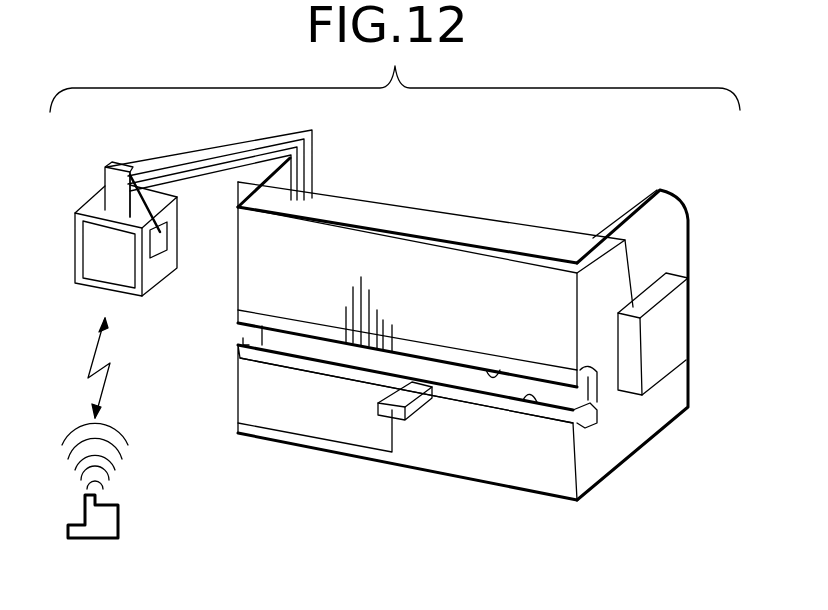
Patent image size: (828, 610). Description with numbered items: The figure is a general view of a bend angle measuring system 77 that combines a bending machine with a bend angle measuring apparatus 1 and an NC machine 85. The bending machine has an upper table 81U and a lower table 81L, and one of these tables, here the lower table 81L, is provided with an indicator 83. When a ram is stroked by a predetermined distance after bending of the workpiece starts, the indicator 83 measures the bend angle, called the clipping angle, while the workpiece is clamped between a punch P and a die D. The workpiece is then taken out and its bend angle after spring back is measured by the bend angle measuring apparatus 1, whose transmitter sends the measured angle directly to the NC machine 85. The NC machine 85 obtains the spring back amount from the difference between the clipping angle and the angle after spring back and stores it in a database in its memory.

The bend angle measuring apparatus 1 is at (91, 541).
The bend angle measuring system 77 is at (593, 191).
The upper table 81U is at (452, 263).
The lower table 81L is at (481, 475).
The indicator 83 is at (410, 397).
The NC machine 85 is at (165, 282).
The punch P is at (489, 368).
The die D is at (530, 405).